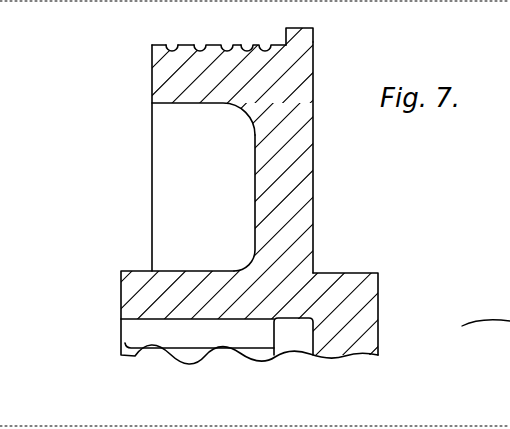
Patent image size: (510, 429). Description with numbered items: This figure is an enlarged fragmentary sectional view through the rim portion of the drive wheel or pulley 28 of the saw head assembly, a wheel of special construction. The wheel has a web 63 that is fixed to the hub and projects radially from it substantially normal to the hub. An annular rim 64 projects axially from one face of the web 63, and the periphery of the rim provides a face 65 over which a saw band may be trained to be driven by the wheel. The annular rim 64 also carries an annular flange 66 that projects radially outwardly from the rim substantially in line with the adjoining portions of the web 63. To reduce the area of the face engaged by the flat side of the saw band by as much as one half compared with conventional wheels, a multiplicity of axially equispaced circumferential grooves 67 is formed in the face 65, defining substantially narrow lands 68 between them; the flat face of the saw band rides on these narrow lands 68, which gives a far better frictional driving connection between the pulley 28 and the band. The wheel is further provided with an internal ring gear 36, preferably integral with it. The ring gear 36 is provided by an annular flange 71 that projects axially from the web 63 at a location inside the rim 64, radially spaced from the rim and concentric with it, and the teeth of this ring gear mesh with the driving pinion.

The drive wheel 28 is at (80, 230).
The internal ring gear 36 is at (136, 334).
The web 63 is at (304, 190).
The annular rim 64 is at (158, 75).
The face 65 is at (177, 44).
The annular flange 66 is at (306, 38).
The circumferential grooves 67 is at (205, 48).
The lands 68 is at (274, 43).
The annular flange 71 is at (133, 290).